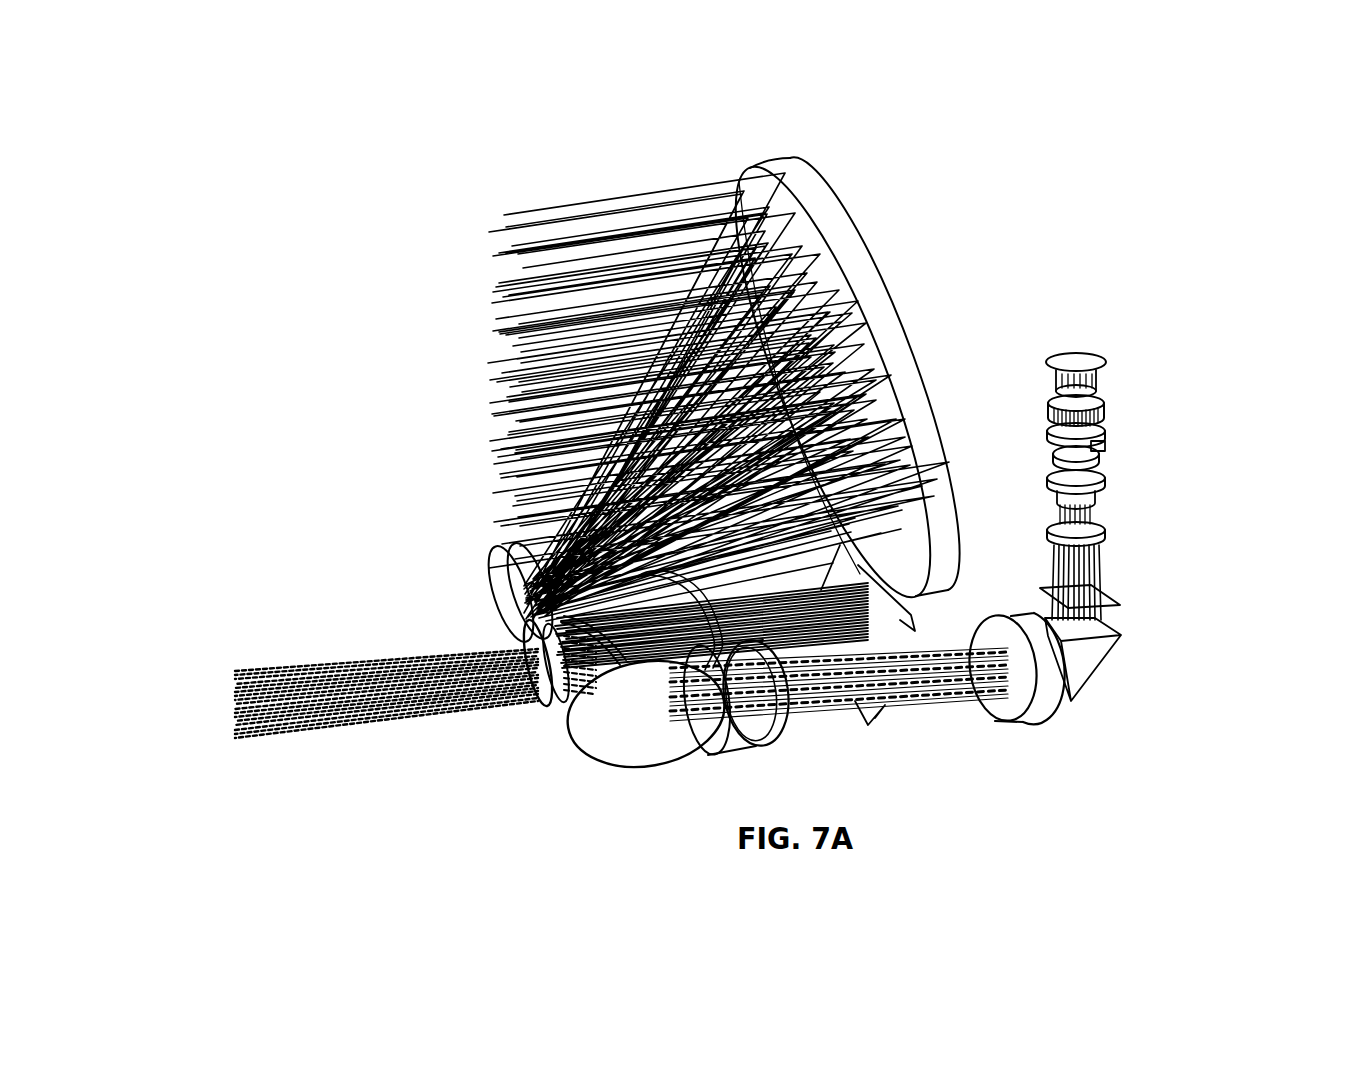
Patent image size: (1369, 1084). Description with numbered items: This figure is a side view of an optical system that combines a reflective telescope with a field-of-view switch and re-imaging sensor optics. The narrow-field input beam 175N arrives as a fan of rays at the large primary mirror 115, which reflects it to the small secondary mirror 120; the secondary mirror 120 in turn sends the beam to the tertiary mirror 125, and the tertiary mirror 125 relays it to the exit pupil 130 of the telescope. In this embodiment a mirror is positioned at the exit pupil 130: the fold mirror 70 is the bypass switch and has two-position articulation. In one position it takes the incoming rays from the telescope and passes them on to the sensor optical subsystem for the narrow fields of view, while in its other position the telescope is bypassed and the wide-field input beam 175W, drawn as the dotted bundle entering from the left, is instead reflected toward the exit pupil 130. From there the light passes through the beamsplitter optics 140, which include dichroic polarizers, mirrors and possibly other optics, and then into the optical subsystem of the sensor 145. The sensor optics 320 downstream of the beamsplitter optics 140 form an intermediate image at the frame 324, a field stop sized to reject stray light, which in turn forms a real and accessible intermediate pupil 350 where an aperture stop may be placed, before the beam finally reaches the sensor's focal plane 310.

The primary mirror 115 is at (843, 206).
The secondary mirror 120 is at (492, 600).
The tertiary mirror 125 is at (906, 626).
The exit pupil 130 is at (547, 716).
The fold mirror 70 is at (637, 685).
The beamsplitter optics 140 is at (992, 729).
The sensor 145 is at (1097, 279).
The focal plane 310 is at (1078, 349).
The sensor optics 320 is at (1127, 485).
The frame 324 is at (1088, 592).
The intermediate pupil 350 is at (1044, 448).
The input beam 175N is at (467, 165).
The input beam 175W is at (215, 663).